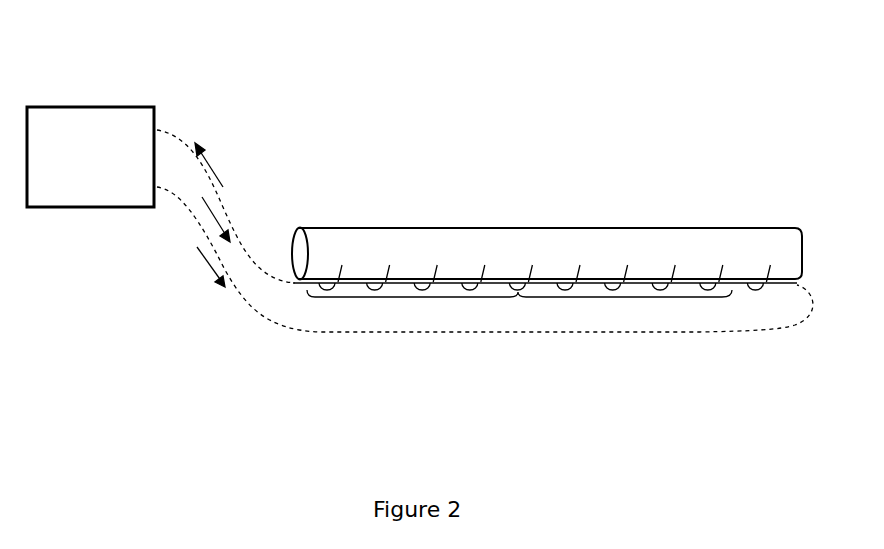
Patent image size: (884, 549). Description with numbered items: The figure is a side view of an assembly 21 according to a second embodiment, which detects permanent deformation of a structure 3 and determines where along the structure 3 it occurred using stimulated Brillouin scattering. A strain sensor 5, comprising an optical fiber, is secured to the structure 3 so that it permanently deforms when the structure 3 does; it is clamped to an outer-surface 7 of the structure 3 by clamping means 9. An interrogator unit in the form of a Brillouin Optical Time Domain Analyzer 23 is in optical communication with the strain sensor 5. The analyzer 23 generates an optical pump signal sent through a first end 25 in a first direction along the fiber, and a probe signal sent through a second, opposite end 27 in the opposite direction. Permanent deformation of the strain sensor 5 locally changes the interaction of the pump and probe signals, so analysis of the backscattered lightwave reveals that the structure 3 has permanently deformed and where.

The Brillouin Optical Time Domain Analyzer 23 is at (135, 120).
The assembly 21 is at (557, 143).
The first end 25 is at (293, 282).
The outer-surface 7 is at (547, 212).
The structure 3 is at (687, 243).
The clamping means 9 is at (660, 288).
The second end 27 is at (800, 276).
The strain sensor 5 is at (780, 283).